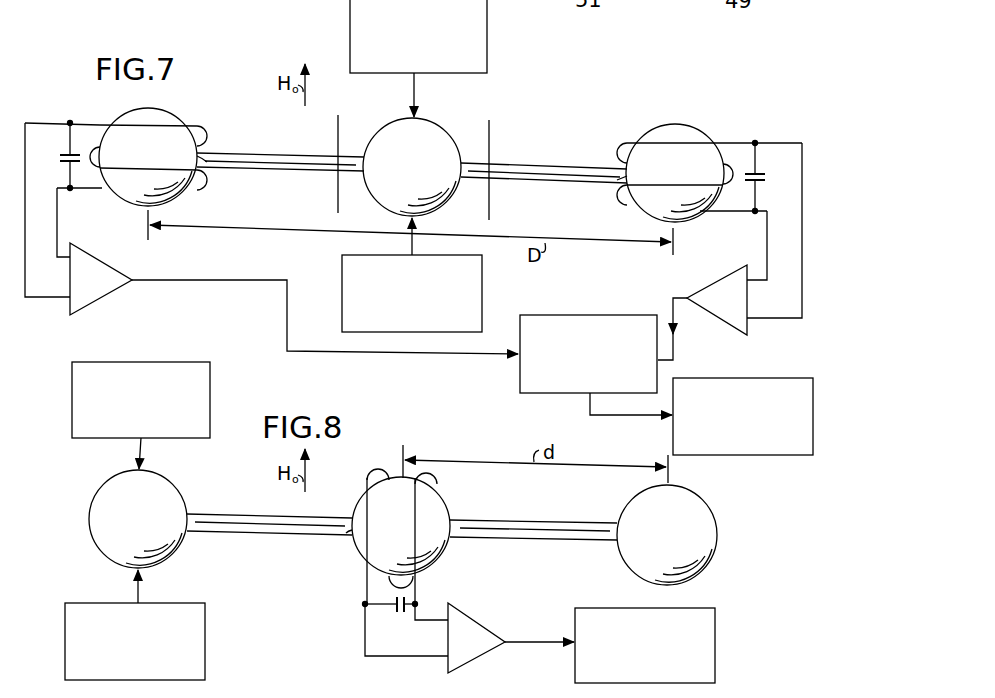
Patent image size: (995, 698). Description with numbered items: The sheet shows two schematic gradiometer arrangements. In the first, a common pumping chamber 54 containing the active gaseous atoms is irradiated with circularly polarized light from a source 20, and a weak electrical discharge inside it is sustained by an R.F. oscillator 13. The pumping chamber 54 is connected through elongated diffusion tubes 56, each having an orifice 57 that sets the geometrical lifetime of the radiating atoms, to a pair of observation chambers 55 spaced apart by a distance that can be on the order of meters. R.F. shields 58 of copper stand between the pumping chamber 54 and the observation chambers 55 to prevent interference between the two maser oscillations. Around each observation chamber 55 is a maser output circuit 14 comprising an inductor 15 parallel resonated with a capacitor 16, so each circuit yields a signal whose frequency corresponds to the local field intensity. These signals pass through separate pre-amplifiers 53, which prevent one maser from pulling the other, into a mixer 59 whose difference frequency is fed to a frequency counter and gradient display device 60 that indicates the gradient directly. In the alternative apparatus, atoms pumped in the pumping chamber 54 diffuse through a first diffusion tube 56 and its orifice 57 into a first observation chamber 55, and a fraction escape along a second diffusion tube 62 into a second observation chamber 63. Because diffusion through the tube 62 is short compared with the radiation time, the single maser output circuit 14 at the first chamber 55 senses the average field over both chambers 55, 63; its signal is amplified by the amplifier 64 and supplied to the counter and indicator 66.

In FIG. 7, the R.F. oscillator 13 is at (482, 291).
In FIG. 8, the R.F. oscillator 13 is at (210, 392).
In FIG. 7, the maser output circuit 14 is at (100, 118).
In FIG. 8, the maser output circuit 14 is at (450, 556).
In FIG. 7, the inductor 15 is at (188, 126).
In FIG. 8, the inductor 15 is at (440, 483).
In FIG. 7, the capacitor 16 is at (61, 155).
In FIG. 8, the capacitor 16 is at (406, 612).
In FIG. 7, the circularly polarized light source 20 is at (487, 47).
In FIG. 8, the circularly polarized light source 20 is at (205, 618).
In FIG. 7, the pre-amplifier 53 is at (118, 274).
In FIG. 7, the pumping chamber 54 is at (400, 161).
In FIG. 8, the pumping chamber 54 is at (126, 513).
In FIG. 7, the observation chamber 55 is at (136, 156).
In FIG. 8, the observation chamber 55 is at (378, 522).
In FIG. 7, the diffusion tube 56 is at (284, 159).
In FIG. 8, the diffusion tube 56 is at (251, 517).
In FIG. 7, the orifice 57 is at (210, 173).
In FIG. 8, the orifice 57 is at (348, 528).
In FIG. 7, the R.F. shield 58 is at (338, 198).
In FIG. 7, the mixer 59 is at (596, 315).
In FIG. 7, the frequency counter and gradient display device 60 is at (758, 378).
In FIG. 8, the second diffusion tube 62 is at (548, 522).
In FIG. 8, the second observation chamber 63 is at (651, 531).
In FIG. 8, the amplifier 64 is at (470, 610).
In FIG. 8, the counter and indicator 66 is at (596, 683).